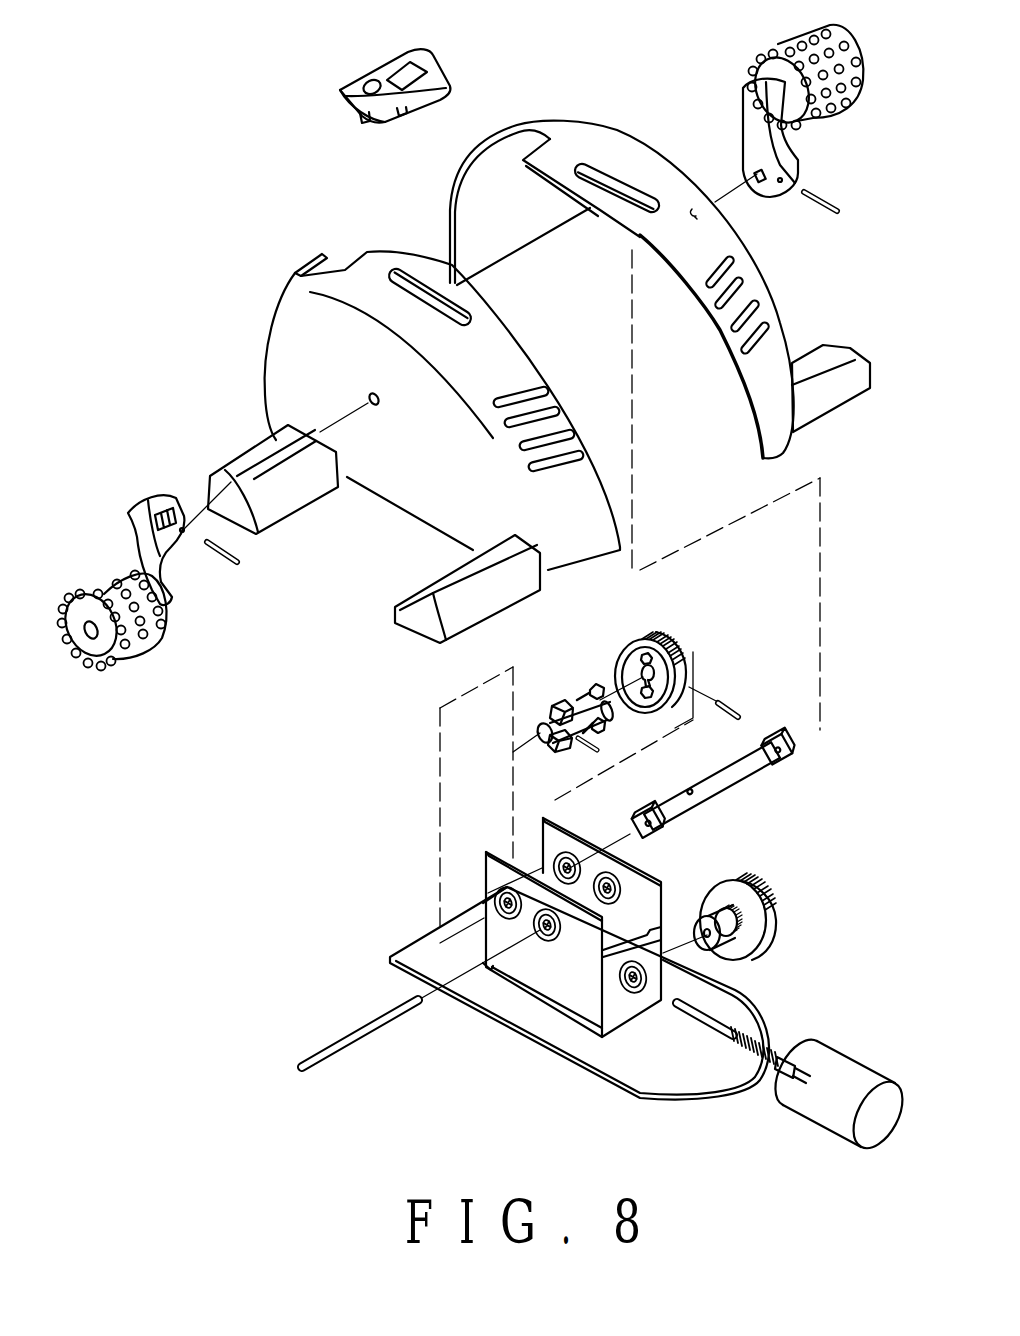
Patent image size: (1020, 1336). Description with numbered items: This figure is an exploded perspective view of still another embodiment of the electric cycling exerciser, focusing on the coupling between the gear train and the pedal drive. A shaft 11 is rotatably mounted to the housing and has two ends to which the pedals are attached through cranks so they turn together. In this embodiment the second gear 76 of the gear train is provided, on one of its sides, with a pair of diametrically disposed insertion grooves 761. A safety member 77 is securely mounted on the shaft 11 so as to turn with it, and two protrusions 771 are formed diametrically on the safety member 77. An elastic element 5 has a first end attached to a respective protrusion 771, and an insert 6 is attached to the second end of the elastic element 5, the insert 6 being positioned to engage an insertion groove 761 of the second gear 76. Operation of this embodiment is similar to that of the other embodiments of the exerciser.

The elastic element 5 is at (580, 696).
The insert 6 is at (600, 682).
The shaft 11 is at (735, 772).
The second gear 76 is at (688, 673).
The insertion grooves 761 is at (663, 640).
The safety member 77 is at (550, 728).
The protrusions 771 is at (560, 703).